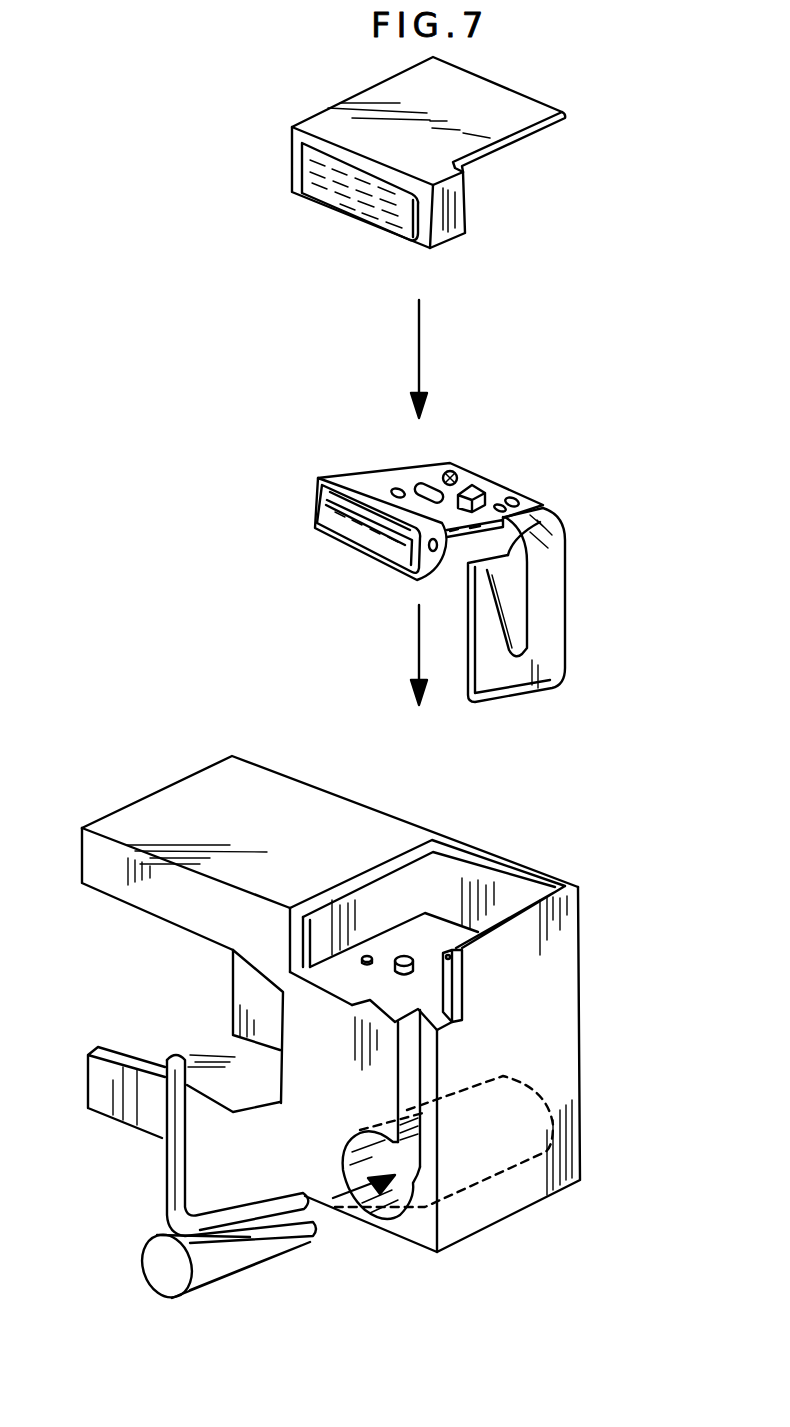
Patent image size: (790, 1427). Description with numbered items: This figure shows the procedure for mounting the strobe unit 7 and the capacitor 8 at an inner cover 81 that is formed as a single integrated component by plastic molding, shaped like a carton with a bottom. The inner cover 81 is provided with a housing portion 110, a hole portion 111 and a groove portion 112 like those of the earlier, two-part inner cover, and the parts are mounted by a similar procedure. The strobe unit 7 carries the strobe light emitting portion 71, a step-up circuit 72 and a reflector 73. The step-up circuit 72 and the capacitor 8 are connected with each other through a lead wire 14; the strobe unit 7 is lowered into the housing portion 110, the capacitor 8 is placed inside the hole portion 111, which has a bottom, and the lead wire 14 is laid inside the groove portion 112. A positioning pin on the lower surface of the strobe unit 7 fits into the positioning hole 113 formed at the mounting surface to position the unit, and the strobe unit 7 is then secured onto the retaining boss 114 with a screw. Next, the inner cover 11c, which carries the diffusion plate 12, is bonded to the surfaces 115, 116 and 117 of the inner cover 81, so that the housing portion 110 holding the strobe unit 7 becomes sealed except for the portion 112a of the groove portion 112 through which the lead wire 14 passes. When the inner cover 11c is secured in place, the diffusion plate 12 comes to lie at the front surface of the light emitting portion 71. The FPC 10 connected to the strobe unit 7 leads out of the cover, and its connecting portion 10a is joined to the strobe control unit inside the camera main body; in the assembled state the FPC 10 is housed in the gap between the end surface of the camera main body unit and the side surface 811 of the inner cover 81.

The inner cover 11c is at (517, 108).
The diffusion plate 12 is at (332, 200).
The strobe unit 7 is at (530, 482).
The step-up circuit 72 is at (470, 480).
The strobe light emitting portion 71 is at (410, 540).
The reflector 73 is at (343, 477).
The FPC 10 is at (547, 648).
The connecting portion 10a is at (485, 568).
The inner cover 81 is at (203, 792).
The surface 117 is at (497, 883).
The surface 116 is at (303, 948).
The housing portion 110 is at (430, 940).
The portion of groove portion 112a is at (350, 1005).
The positioning hole 113 is at (368, 956).
The retaining boss 114 is at (407, 955).
The surface 115 is at (452, 985).
The side surface 811 is at (553, 1056).
The groove portion 112 is at (407, 1080).
The hole portion 111 is at (390, 1196).
The lead wire 14 is at (167, 1188).
The capacitor 8 is at (277, 1247).